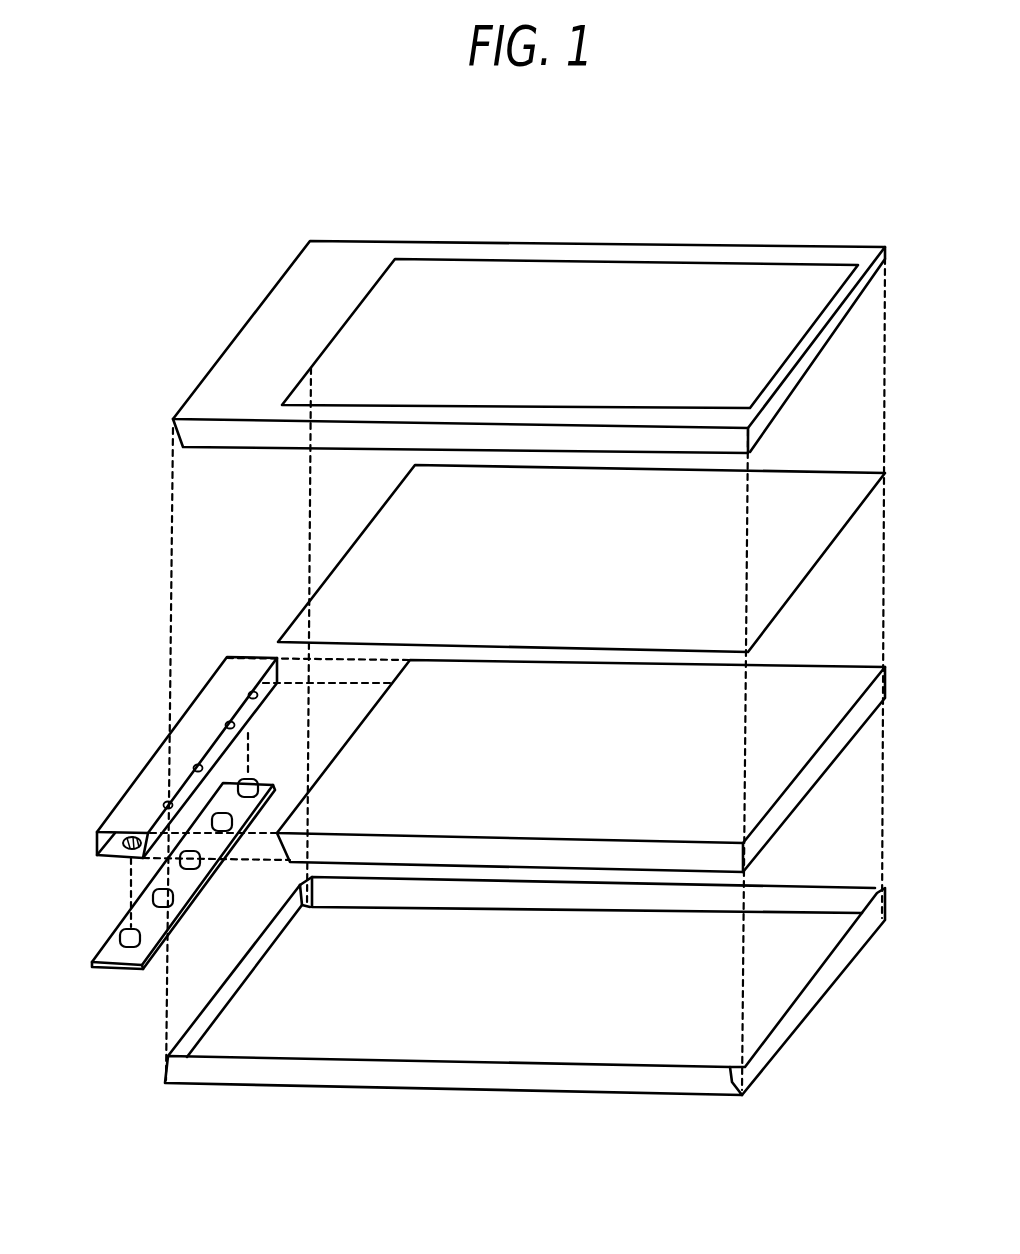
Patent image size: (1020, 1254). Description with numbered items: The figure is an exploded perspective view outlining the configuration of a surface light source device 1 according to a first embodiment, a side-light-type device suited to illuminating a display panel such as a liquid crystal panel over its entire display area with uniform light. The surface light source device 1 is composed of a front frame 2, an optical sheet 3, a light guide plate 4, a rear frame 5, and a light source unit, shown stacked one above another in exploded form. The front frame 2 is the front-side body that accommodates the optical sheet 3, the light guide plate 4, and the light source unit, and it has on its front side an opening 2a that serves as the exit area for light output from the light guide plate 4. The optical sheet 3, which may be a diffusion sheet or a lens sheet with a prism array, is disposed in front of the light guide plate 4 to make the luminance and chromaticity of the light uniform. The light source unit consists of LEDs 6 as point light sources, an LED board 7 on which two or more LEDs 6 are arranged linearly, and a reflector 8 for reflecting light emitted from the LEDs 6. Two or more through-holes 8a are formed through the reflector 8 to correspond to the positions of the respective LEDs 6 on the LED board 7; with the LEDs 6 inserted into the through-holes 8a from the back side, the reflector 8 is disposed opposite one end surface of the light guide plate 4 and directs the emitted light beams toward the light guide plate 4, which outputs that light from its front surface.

The surface light source device 1 is at (866, 208).
The front frame 2 is at (723, 243).
The opening 2a is at (500, 270).
The optical sheet 3 is at (770, 470).
The light guide plate 4 is at (763, 663).
The rear frame 5 is at (763, 883).
The LEDs 6 is at (205, 858).
The LED board 7 is at (128, 914).
The reflector 8 is at (150, 760).
The through-holes 8a is at (118, 854).